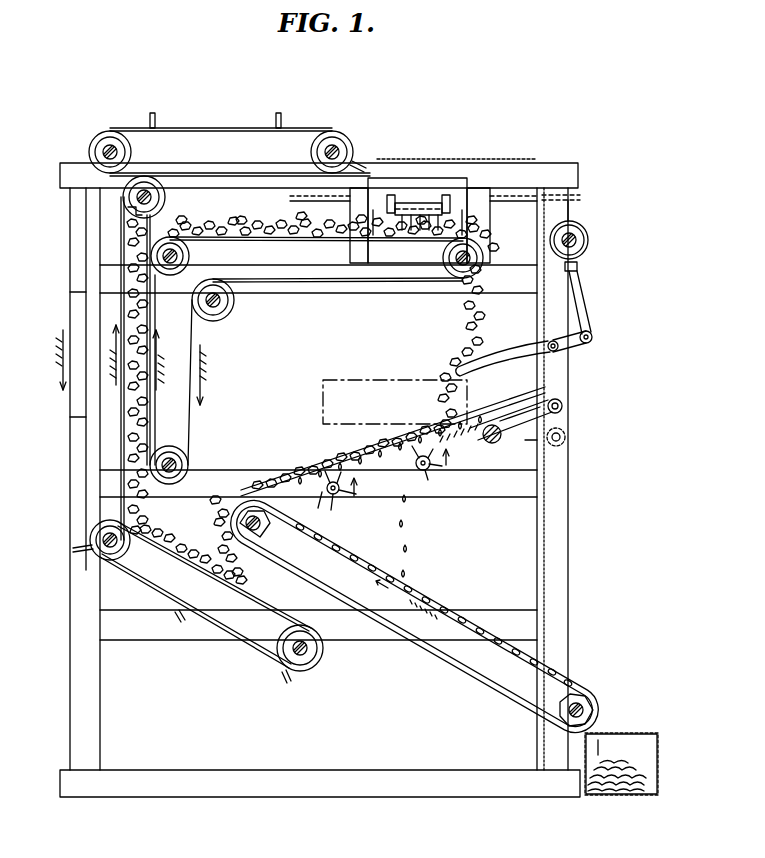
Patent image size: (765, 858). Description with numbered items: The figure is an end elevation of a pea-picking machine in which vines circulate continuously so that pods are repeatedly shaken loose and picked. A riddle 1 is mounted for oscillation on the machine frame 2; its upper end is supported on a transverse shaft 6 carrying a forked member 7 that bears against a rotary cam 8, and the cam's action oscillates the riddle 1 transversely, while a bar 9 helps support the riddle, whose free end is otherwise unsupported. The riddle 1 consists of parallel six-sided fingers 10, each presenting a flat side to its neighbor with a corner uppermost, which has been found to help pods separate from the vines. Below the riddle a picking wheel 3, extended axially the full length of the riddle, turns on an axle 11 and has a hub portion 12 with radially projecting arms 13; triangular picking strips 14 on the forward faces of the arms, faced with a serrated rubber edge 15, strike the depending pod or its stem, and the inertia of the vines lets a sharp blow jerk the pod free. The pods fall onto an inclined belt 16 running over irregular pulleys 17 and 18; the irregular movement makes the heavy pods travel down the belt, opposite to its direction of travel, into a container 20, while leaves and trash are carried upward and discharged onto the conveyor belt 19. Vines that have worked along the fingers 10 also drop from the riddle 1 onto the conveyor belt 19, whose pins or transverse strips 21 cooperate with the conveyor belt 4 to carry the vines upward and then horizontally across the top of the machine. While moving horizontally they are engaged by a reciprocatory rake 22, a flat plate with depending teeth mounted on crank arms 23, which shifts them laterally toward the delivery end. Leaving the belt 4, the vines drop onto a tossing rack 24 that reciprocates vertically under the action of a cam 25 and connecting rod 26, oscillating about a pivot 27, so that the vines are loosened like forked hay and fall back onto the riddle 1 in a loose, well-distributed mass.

The riddle 1 is at (500, 412).
The machine frame 2 is at (560, 514).
The picking wheel 3 is at (447, 466).
The conveyor belt 4 is at (273, 236).
The transverse shaft 6 is at (563, 406).
The forked member 7 is at (525, 440).
The rotary cam 8 is at (567, 434).
The bar 9 is at (501, 436).
The fingers 10 is at (465, 433).
The axle 11 is at (338, 494).
The hub portion 12 is at (338, 500).
The radially projecting arms 13 is at (322, 498).
The picking strips 14 is at (357, 486).
The serrated rubber edge 15 is at (367, 382).
The inclined belt 16 is at (460, 610).
The irregular pulley 17 is at (258, 533).
The irregular pulley 18 is at (571, 698).
The conveyor belt 19 is at (240, 589).
The container 20 is at (660, 756).
The pins or transverse strips 21 is at (204, 547).
The reciprocatory rake 22 is at (410, 212).
The crank arms 23 is at (445, 198).
The tossing rack 24 is at (485, 374).
The cam 25 is at (570, 228).
The connecting rod 26 is at (582, 297).
The pivot 27 is at (568, 348).